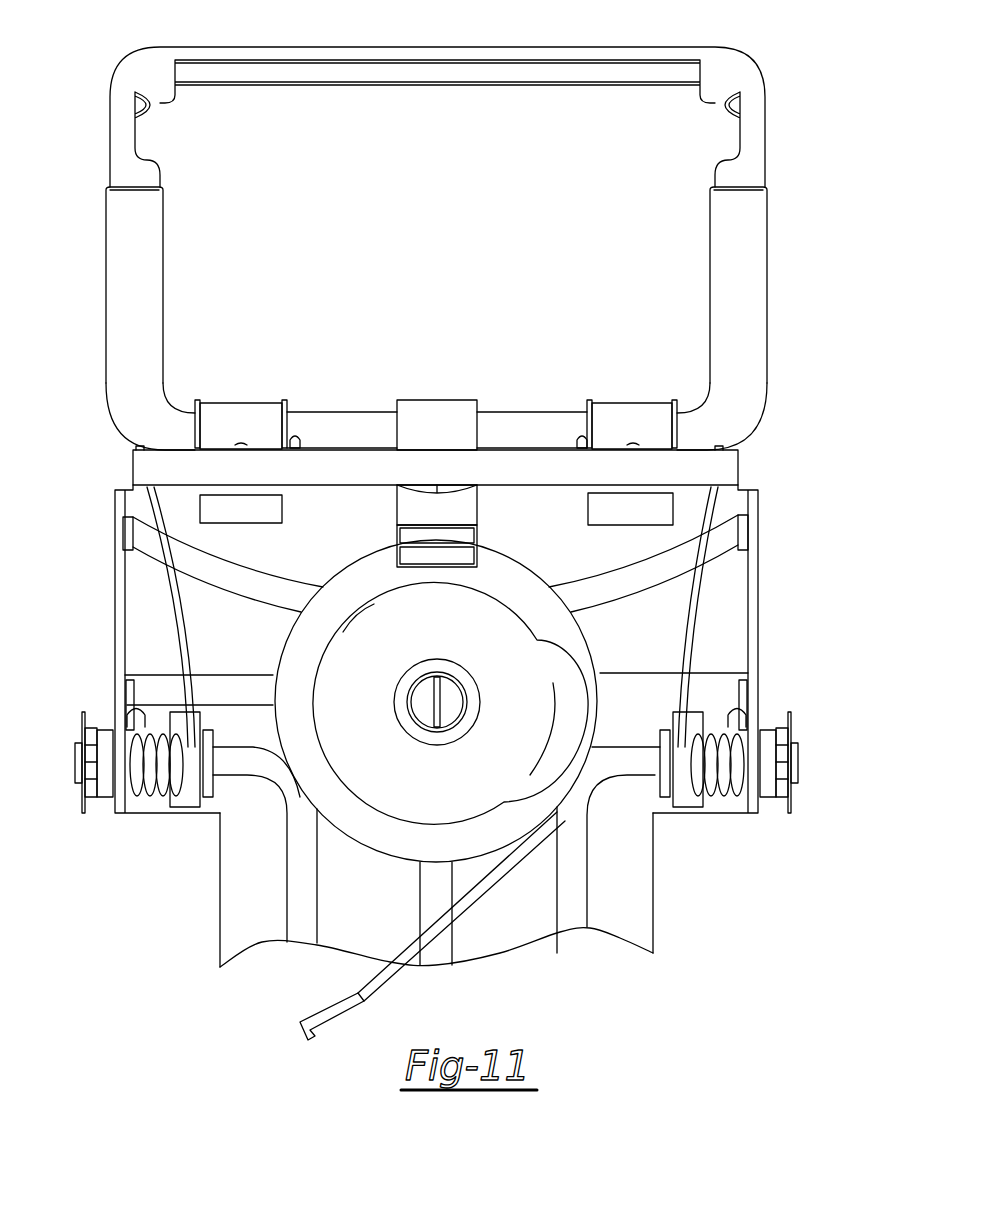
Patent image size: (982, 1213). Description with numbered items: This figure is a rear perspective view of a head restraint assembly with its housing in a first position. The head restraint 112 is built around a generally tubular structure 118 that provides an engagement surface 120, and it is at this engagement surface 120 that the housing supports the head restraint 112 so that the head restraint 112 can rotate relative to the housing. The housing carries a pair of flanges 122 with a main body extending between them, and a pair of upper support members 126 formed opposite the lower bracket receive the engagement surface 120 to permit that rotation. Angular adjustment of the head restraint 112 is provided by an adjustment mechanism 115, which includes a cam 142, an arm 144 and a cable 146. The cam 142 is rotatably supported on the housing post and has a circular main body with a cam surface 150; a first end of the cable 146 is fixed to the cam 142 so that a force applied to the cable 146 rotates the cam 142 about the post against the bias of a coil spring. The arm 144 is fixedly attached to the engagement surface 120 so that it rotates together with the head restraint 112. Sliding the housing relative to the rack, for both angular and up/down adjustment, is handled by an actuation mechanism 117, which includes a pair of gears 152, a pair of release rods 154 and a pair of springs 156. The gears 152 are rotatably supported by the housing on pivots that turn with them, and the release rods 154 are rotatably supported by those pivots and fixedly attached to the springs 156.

The head restraint 112 is at (747, 50).
The tubular structure 118 is at (752, 178).
The engagement surface 120 is at (343, 410).
The upper support members 126 is at (243, 408).
The arm 144 is at (443, 394).
The release rods 154 is at (138, 452).
The flanges 122 is at (120, 601).
The actuation mechanism 117 is at (773, 703).
The gears 152 is at (89, 800).
The springs 156 is at (150, 797).
The cam 142 is at (303, 799).
The cam surface 150 is at (372, 828).
The cable 146 is at (462, 893).
The adjustment mechanism 115 is at (568, 828).